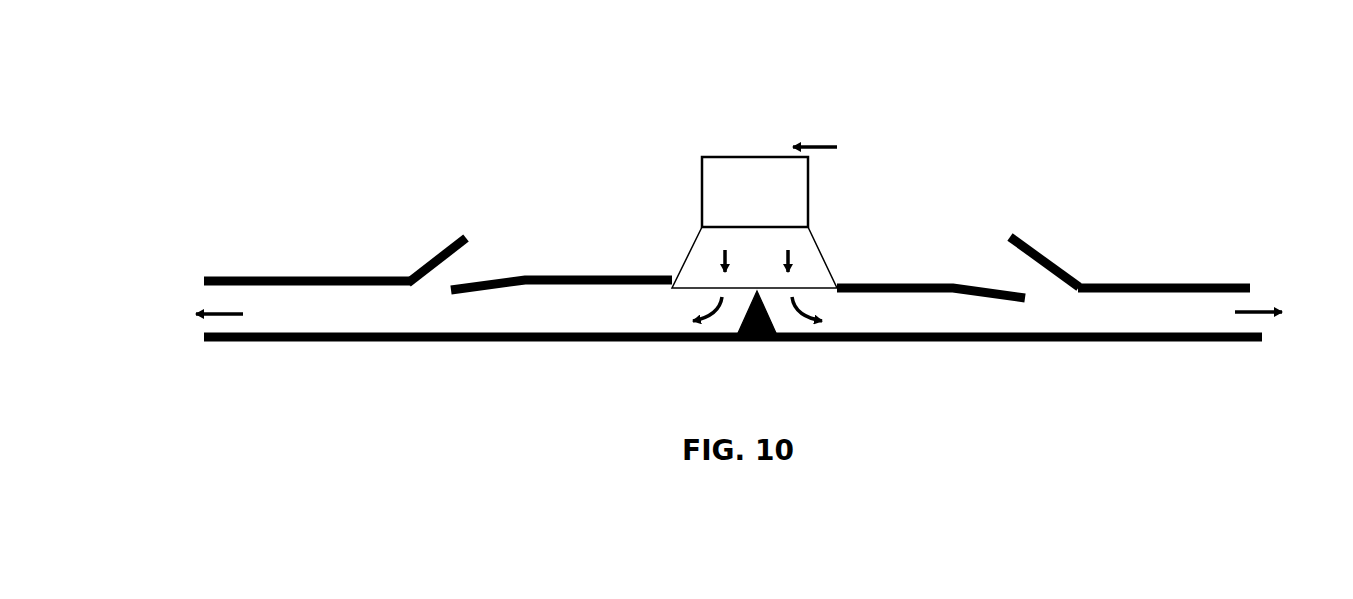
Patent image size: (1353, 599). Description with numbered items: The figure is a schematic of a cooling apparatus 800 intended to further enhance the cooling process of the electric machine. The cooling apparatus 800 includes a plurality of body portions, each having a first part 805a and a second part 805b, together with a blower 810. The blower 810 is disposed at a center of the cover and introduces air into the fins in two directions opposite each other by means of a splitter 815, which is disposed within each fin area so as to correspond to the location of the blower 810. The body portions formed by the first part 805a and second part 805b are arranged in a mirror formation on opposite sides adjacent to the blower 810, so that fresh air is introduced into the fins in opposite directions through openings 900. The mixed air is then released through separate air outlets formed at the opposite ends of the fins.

The cooling apparatus 800 is at (748, 113).
The first part 805a is at (410, 272).
The second part 805b is at (607, 275).
The blower 810 is at (702, 162).
The splitter 815 is at (741, 343).
The openings 900 is at (444, 275).